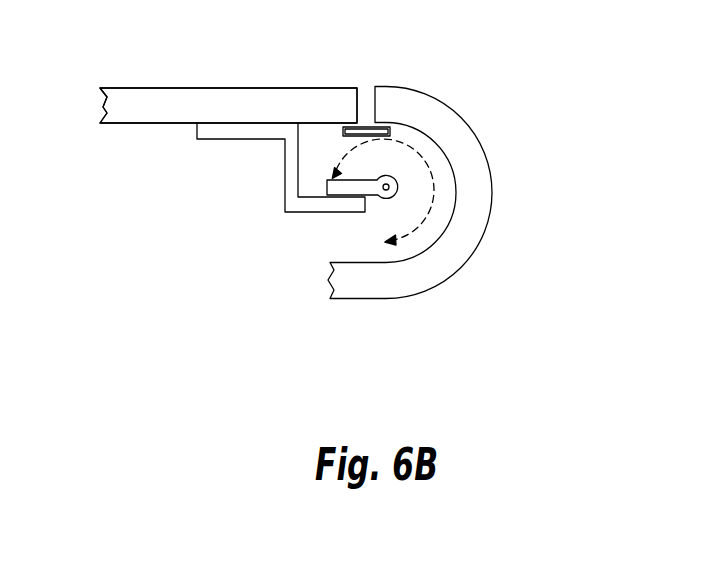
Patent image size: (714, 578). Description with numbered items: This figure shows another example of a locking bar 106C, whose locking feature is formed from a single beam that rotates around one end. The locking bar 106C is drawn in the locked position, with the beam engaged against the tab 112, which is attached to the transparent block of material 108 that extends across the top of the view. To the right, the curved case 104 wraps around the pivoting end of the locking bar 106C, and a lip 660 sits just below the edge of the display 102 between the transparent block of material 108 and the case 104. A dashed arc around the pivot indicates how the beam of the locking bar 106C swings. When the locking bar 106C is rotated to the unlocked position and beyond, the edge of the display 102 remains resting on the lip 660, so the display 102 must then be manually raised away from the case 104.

The display 102 is at (203, 72).
The transparent block of material 108 is at (130, 117).
The tab 112 is at (289, 213).
The lip 660 is at (363, 137).
The locking bar 106C is at (398, 186).
The case 104 is at (407, 298).